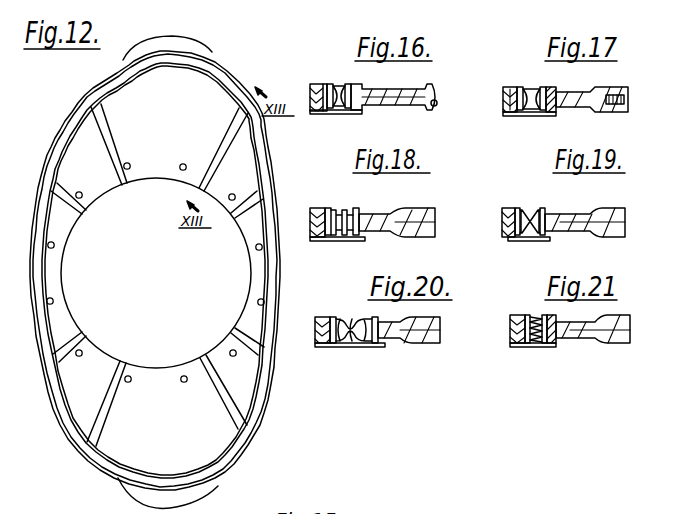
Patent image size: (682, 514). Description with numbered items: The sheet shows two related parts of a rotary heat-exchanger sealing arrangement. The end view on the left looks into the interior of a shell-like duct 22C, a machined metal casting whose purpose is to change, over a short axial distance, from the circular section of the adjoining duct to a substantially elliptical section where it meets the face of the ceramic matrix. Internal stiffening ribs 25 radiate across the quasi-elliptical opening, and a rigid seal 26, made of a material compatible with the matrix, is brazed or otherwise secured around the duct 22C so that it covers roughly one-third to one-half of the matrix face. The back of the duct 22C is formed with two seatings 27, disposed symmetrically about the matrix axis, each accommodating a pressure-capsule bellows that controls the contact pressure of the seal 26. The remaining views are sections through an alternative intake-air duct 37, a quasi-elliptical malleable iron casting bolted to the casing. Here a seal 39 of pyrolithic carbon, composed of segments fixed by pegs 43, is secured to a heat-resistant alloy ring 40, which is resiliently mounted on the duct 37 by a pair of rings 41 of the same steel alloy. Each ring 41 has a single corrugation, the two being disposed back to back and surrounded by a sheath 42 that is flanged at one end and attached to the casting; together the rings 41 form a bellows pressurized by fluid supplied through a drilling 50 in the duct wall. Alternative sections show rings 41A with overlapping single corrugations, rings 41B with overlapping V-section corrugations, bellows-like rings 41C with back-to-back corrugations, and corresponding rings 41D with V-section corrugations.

In FIG. 12, the shell-like duct 22C is at (116, 76).
In FIG. 12, the internal stiffening ribs 25 is at (222, 152).
In FIG. 12, the seal 26 is at (70, 143).
In FIG. 12, the seatings 27 is at (168, 45).
In FIG. 16, the intake-air duct 37 is at (410, 85).
In FIG. 17, the intake-air duct 37 is at (596, 90).
In FIG. 18, the intake-air duct 37 is at (412, 212).
In FIG. 19, the intake-air duct 37 is at (616, 237).
In FIG. 20, the intake-air duct 37 is at (432, 343).
In FIG. 21, the intake-air duct 37 is at (628, 343).
In FIG. 16, the seal 39 is at (312, 88).
In FIG. 17, the seal 39 is at (505, 112).
In FIG. 18, the seal 39 is at (313, 212).
In FIG. 19, the seal 39 is at (503, 224).
In FIG. 20, the seal 39 is at (317, 322).
In FIG. 21, the seal 39 is at (511, 333).
In FIG. 16, the heat-resistant alloy ring 40 is at (330, 84).
In FIG. 17, the heat-resistant alloy ring 40 is at (522, 87).
In FIG. 16, the rings 41 is at (352, 88).
In FIG. 17, the rings 41 is at (545, 90).
In FIG. 18, the rings 41A is at (347, 211).
In FIG. 19, the rings 41B is at (531, 212).
In FIG. 20, the rings 41C is at (353, 320).
In FIG. 21, the rings 41D is at (535, 317).
In FIG. 16, the sheath 42 is at (340, 112).
In FIG. 17, the sheath 42 is at (525, 116).
In FIG. 18, the sheath 42 is at (356, 241).
In FIG. 19, the sheath 42 is at (536, 241).
In FIG. 20, the sheath 42 is at (368, 347).
In FIG. 21, the sheath 42 is at (538, 348).
In FIG. 17, the pegs 43 is at (508, 100).
In FIG. 16, the drilling 50 is at (434, 106).